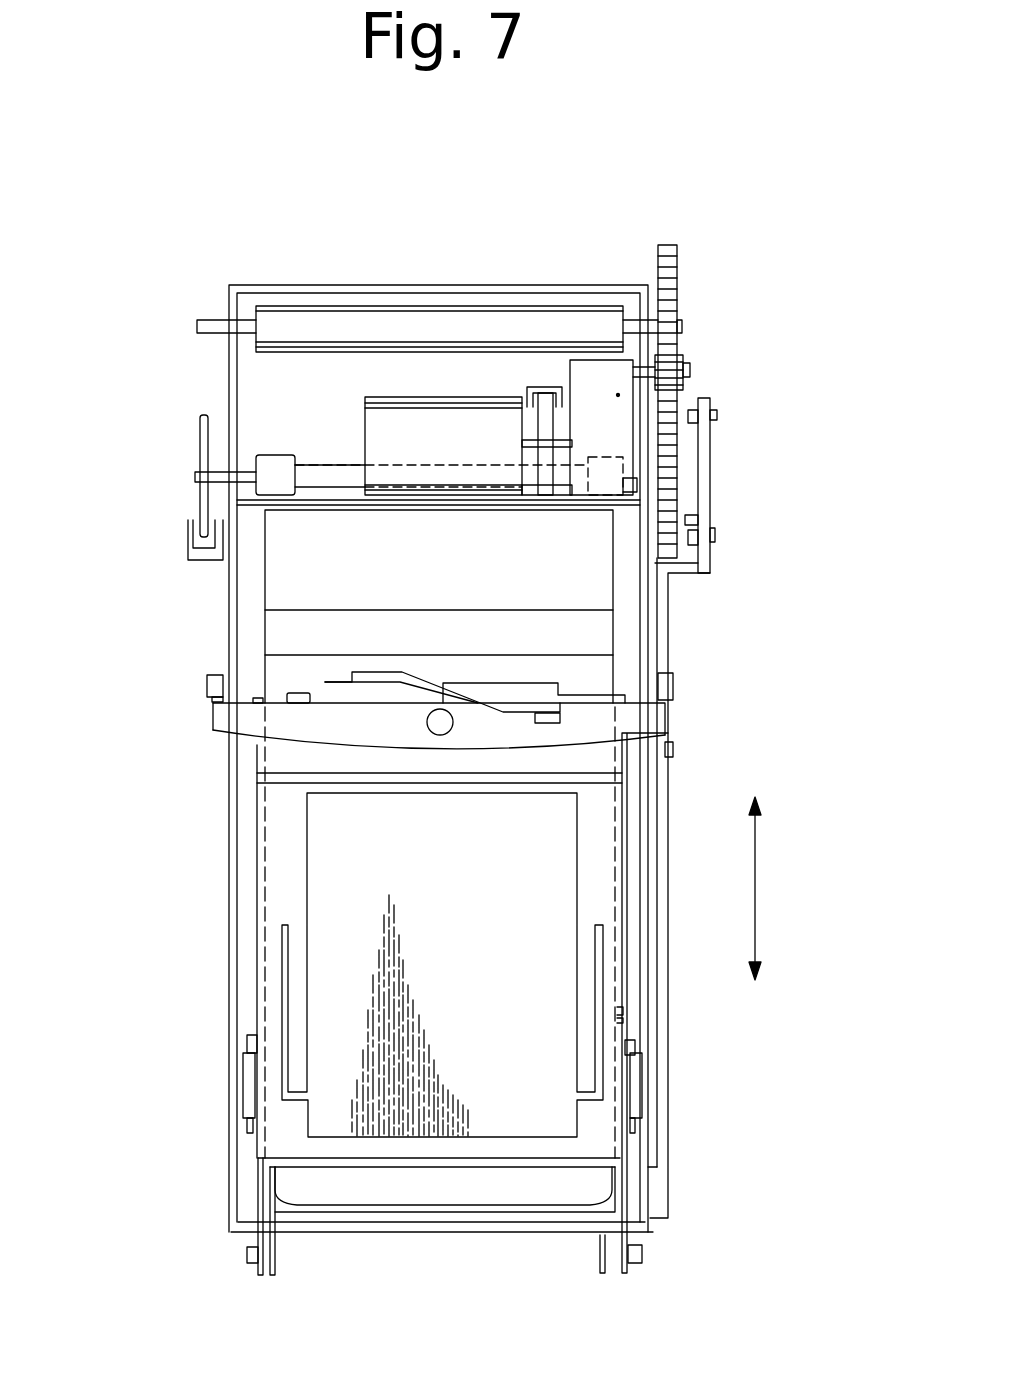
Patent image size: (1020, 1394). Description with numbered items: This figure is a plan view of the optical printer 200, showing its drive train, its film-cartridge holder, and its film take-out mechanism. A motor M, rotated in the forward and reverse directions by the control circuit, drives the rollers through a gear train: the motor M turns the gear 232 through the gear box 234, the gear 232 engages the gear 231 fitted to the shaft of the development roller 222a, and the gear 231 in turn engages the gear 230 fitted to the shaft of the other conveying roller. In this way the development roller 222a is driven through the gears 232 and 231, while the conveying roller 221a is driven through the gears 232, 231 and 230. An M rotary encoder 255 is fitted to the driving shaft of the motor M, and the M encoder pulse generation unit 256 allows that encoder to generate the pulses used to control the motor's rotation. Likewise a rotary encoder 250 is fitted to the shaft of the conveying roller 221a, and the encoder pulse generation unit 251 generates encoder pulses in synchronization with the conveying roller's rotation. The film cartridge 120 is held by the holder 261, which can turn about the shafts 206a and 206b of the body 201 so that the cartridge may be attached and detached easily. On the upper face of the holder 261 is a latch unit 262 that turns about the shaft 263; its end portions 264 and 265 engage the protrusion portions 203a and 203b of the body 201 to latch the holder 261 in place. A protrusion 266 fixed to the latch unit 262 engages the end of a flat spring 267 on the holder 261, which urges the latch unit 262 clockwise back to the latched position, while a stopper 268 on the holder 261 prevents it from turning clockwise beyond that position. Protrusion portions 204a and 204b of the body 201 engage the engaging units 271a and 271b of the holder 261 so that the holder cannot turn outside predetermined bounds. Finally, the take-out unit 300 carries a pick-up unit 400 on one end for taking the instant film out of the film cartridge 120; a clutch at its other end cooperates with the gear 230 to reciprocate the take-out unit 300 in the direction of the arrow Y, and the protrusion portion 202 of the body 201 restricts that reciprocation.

The optical printer 200 is at (286, 258).
The development roller 222a is at (446, 318).
The gear box 234 is at (598, 370).
The gear 231 is at (677, 270).
The gear 232 is at (684, 362).
The motor M is at (406, 400).
The M rotary encoder 255 is at (545, 412).
The M encoder pulse generation unit 256 is at (546, 375).
The conveying roller 221a is at (276, 456).
The rotary encoder 250 is at (199, 440).
The encoder pulse generation unit 251 is at (188, 545).
The gear 230 is at (700, 500).
The film cartridge 120 is at (285, 557).
The stopper 268 is at (297, 693).
The flat spring 267 is at (430, 672).
The end portion 264 is at (660, 690).
The protrusion portion 203b is at (207, 686).
The protrusion portion 203a is at (673, 686).
The end portion 265 is at (212, 705).
The latch unit 262 is at (215, 722).
The shaft 263 is at (427, 722).
The protrusion 266 is at (548, 722).
The protrusion portion 202 is at (675, 750).
The holder 261 is at (270, 850).
The pick-up unit 400 is at (667, 1200).
The body 201 is at (430, 1235).
The engaging unit 271b is at (245, 1040).
The protrusion portion 204b is at (245, 1110).
The engaging unit 271a is at (640, 1045).
The protrusion portion 204a is at (637, 1105).
The take-out unit 300 is at (675, 1070).
The shaft 206b is at (247, 1255).
The shaft 206a is at (642, 1255).
The arrow Y is at (757, 875).